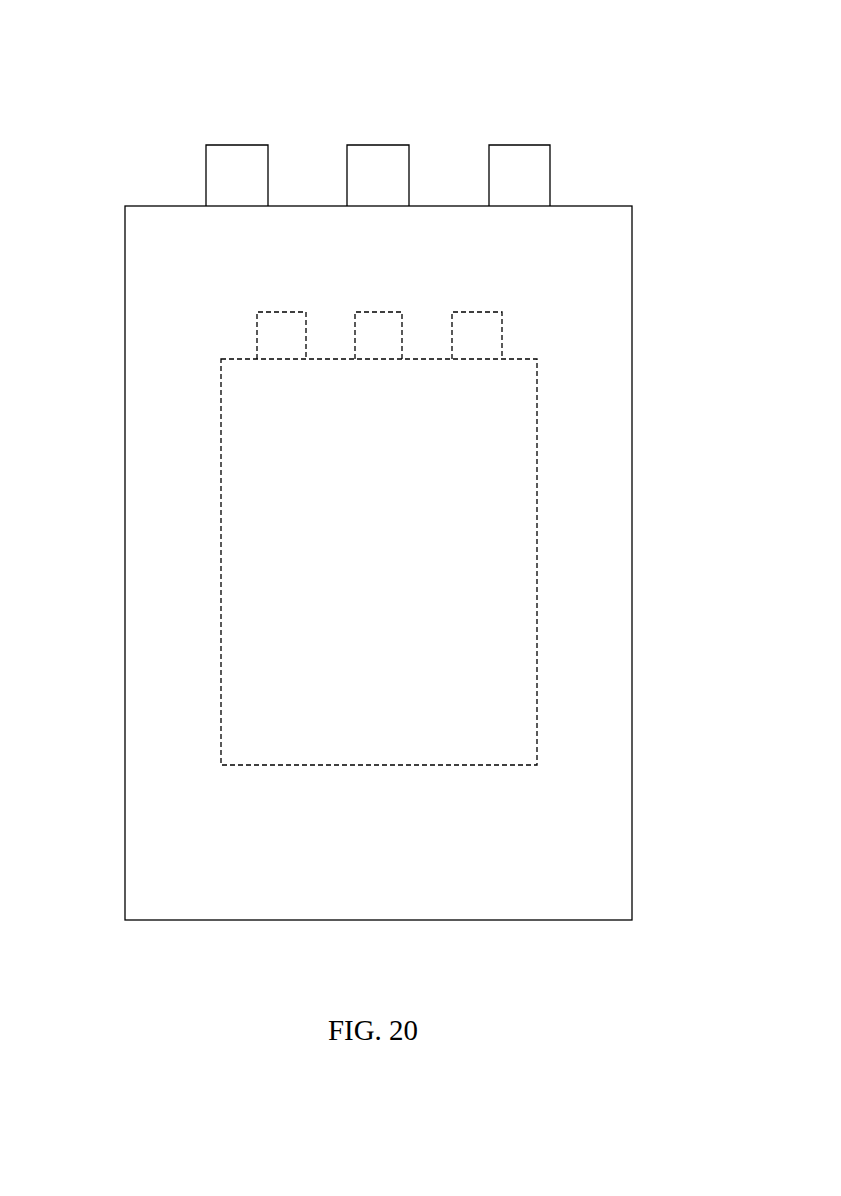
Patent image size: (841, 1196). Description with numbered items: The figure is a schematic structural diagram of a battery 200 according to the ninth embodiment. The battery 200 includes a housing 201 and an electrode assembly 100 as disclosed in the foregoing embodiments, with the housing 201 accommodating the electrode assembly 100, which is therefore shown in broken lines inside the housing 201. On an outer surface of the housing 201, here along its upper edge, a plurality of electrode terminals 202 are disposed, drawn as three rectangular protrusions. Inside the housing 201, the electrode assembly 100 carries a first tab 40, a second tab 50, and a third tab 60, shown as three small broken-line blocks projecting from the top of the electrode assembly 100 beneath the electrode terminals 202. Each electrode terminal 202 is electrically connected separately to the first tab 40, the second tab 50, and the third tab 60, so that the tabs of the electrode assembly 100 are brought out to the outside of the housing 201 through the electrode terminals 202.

The battery 200 is at (487, 52).
The housing 201 is at (125, 260).
The electrode terminal 202 is at (533, 158).
The electrode assembly 100 is at (517, 540).
The first tab 40 is at (270, 330).
The third tab 60 is at (380, 327).
The second tab 50 is at (490, 333).